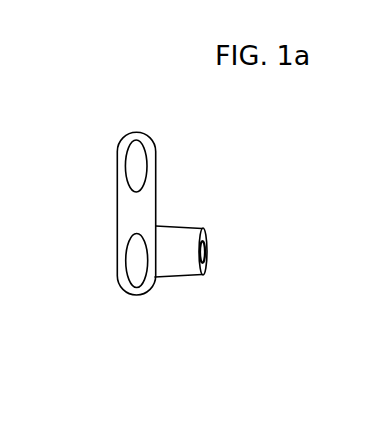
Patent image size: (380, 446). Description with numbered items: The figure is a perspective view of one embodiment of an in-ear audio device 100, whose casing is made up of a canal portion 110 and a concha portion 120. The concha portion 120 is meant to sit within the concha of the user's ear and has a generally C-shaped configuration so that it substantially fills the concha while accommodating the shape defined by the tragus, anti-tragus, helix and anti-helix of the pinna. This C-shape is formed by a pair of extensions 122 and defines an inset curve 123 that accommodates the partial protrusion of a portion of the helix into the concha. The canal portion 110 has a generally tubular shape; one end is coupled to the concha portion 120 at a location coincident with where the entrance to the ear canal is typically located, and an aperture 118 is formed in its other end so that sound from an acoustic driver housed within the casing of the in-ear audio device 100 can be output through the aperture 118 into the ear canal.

The in-ear audio device 100 is at (216, 114).
The canal portion 110 is at (178, 277).
The aperture 118 is at (215, 252).
The concha portion 120 is at (126, 256).
The extensions 122 is at (137, 247).
The inset curve 123 is at (140, 205).